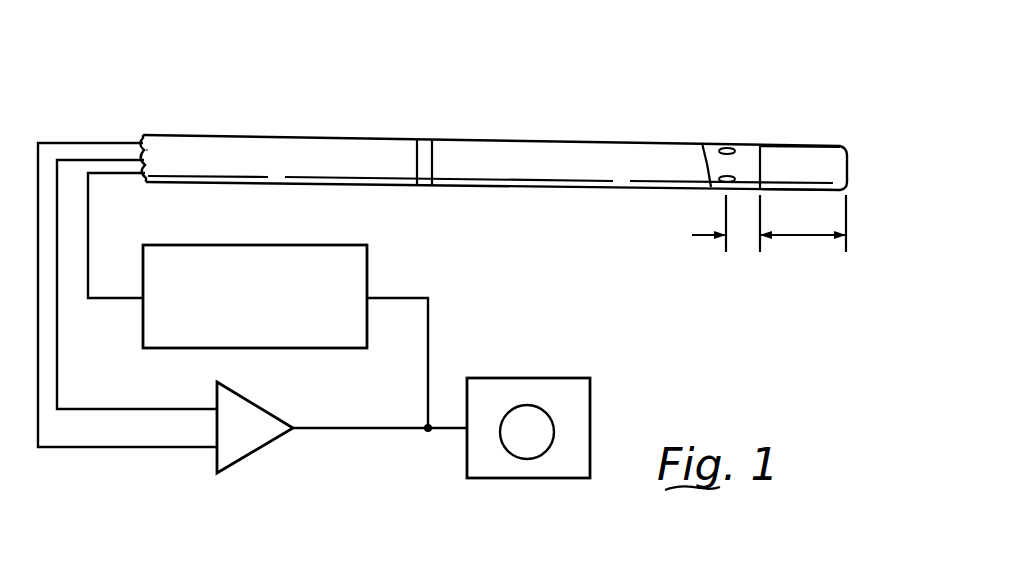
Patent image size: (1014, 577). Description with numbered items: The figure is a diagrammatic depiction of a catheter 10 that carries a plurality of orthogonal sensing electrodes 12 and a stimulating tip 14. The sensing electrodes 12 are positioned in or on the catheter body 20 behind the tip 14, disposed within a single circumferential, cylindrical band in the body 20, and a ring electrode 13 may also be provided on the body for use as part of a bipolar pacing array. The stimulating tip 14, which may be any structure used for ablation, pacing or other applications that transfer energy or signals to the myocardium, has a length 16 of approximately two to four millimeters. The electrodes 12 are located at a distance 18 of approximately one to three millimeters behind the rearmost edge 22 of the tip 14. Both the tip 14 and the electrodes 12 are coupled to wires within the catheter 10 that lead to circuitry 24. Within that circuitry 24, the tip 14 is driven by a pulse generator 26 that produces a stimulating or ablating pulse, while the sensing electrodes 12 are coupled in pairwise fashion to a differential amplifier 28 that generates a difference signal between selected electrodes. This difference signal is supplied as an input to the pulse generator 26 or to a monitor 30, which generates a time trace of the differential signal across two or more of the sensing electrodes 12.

The catheter 10 is at (834, 98).
The sensing electrodes 12 is at (702, 143).
The ring electrode 13 is at (420, 139).
The stimulating tip 14 is at (832, 146).
The length 16 is at (807, 237).
The distance 18 is at (746, 243).
The catheter body 20 is at (565, 140).
The rearmost edge 22 is at (763, 144).
The circuitry 24 is at (403, 504).
The pulse generator 26 is at (367, 267).
The differential amplifier 28 is at (272, 440).
The monitor 30 is at (590, 382).